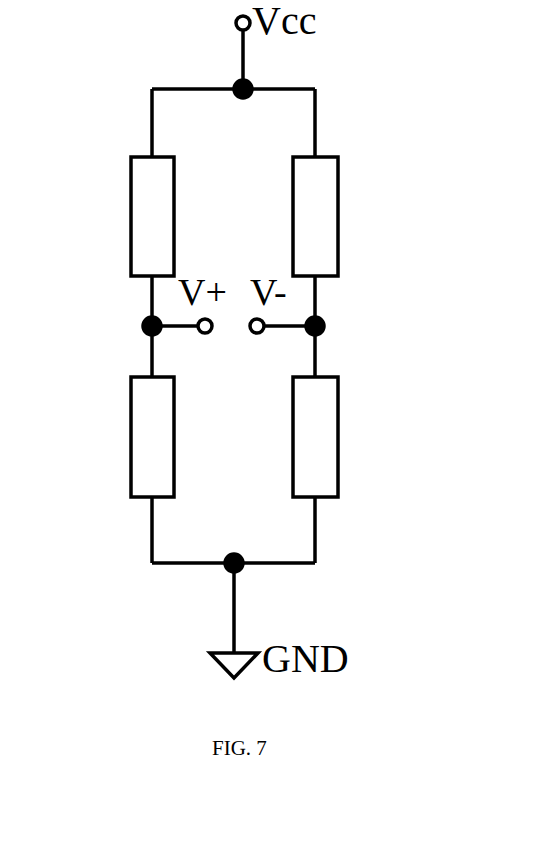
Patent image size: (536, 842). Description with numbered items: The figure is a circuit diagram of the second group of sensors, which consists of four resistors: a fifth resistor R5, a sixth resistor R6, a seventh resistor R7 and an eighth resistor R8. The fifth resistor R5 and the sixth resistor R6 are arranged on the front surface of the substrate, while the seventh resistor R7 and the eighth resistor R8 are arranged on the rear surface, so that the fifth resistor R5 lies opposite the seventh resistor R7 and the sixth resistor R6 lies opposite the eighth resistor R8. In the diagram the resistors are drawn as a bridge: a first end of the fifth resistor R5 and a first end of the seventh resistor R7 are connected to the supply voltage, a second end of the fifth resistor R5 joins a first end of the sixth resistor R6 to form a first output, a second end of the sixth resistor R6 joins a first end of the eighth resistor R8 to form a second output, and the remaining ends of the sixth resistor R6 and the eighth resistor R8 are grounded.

The fifth resistor R5 is at (112, 216).
The sixth resistor R6 is at (362, 216).
The seventh resistor R7 is at (112, 437).
The eighth resistor R8 is at (362, 437).